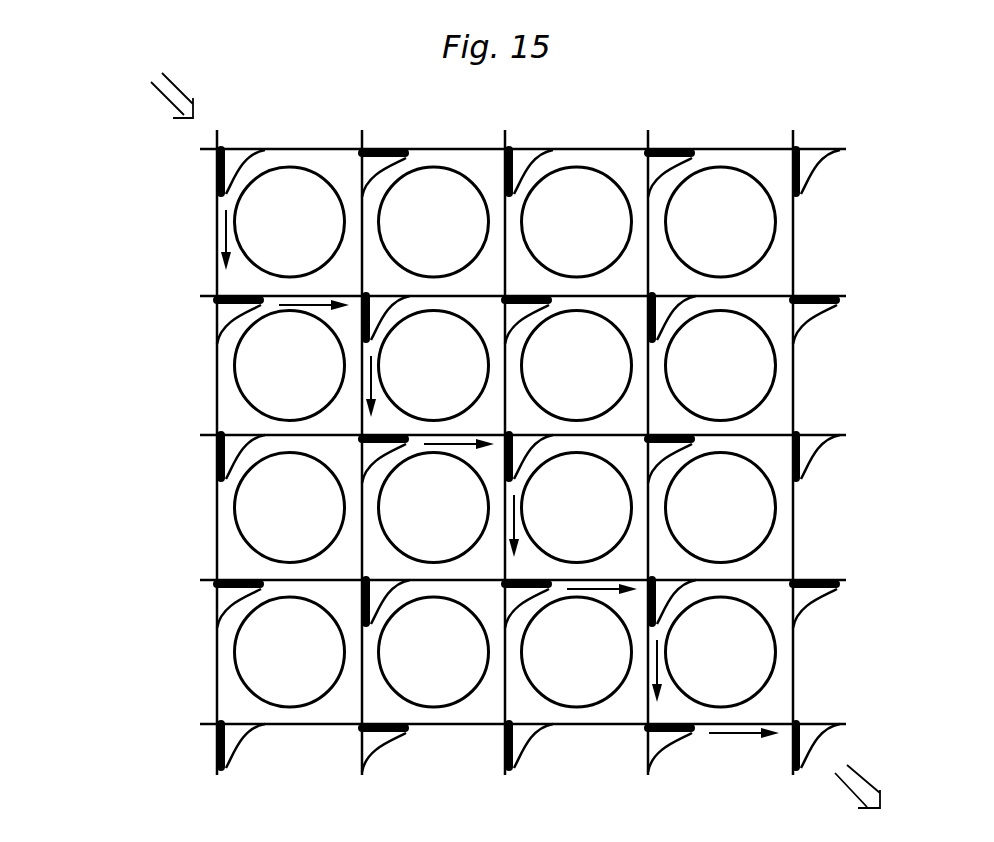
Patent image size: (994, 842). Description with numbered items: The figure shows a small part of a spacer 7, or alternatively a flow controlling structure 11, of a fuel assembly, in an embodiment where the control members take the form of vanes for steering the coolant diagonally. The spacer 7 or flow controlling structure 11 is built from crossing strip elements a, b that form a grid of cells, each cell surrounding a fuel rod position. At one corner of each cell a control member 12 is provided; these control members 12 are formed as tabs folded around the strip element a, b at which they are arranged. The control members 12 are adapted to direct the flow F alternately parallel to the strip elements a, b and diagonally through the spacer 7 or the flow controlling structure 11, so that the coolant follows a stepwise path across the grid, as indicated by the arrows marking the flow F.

The spacer 7 is at (452, 440).
The flow controlling structure 11 is at (170, 548).
The control members 12 is at (376, 454).
The strip element a is at (219, 211).
The strip element b is at (387, 144).
The flow F is at (367, 390).